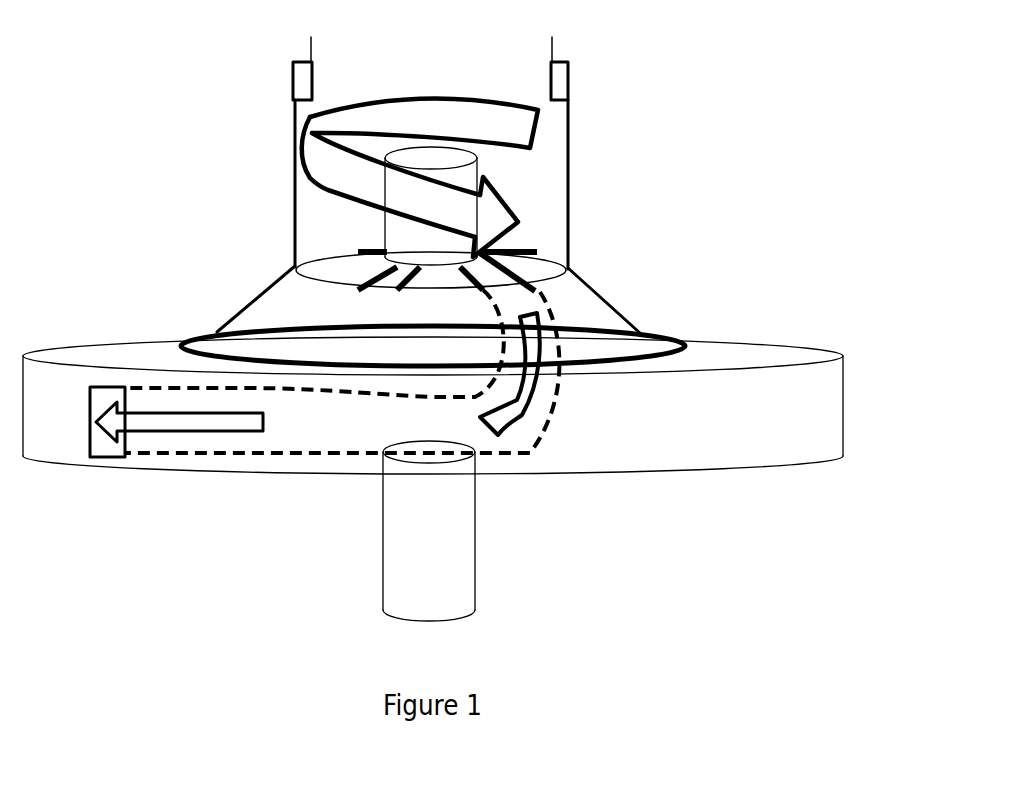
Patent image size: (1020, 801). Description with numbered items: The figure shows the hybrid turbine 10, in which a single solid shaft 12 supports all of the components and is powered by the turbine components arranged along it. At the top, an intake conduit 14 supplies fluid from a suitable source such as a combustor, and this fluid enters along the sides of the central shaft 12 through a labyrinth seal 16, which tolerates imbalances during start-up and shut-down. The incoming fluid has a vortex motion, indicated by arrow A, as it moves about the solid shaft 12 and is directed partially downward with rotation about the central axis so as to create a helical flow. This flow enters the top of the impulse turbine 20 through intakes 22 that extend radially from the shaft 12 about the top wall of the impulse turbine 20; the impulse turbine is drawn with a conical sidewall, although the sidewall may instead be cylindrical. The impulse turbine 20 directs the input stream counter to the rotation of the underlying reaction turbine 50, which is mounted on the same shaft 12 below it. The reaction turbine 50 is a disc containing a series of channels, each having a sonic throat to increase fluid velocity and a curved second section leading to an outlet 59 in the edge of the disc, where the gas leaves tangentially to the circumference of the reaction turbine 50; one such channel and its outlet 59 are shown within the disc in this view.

The hybrid turbine 10 is at (250, 122).
The solid shaft 12 is at (475, 582).
The intake conduit 14 is at (570, 147).
The labyrinth seal 16 is at (570, 87).
The impulse turbine 20 is at (608, 303).
The intakes 22 is at (510, 288).
The reaction turbine 50 is at (760, 470).
The outlet 59 is at (103, 440).
The arrow A is at (320, 187).